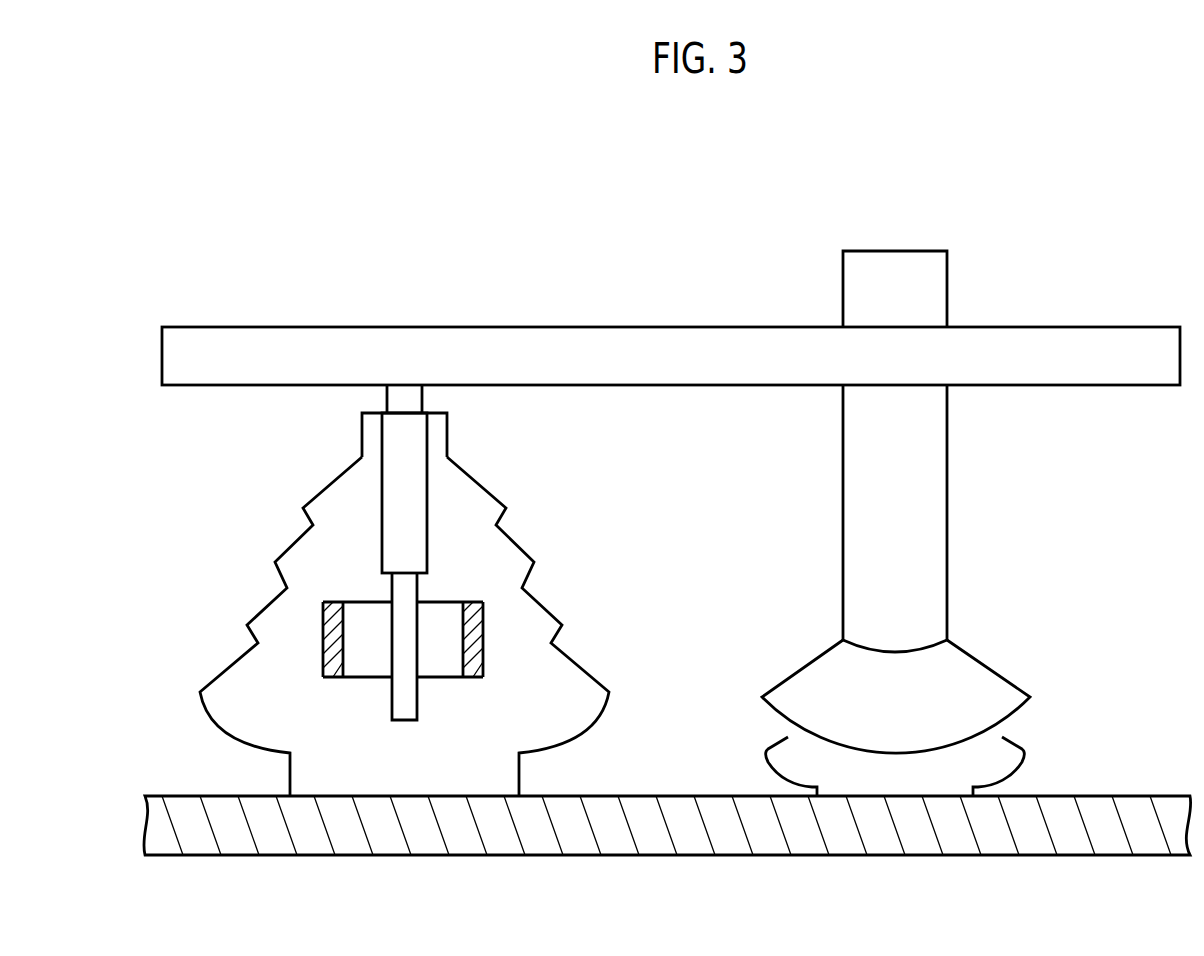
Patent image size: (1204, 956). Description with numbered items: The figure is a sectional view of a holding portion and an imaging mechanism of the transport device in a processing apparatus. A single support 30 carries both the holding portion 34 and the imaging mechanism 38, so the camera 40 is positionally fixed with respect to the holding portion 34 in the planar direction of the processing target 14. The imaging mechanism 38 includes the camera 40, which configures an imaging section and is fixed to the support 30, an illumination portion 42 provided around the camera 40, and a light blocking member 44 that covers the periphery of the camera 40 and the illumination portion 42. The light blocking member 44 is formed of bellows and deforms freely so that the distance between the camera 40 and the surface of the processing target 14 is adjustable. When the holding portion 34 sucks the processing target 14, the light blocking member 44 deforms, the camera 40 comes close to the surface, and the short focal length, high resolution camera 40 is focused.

The processing target 14 is at (1108, 805).
The support 30 is at (623, 345).
The holding portion 34 is at (982, 682).
The imaging mechanism 38 is at (416, 590).
The camera 40 is at (415, 442).
The illumination portion 42 is at (475, 667).
The light blocking member 44 is at (543, 610).